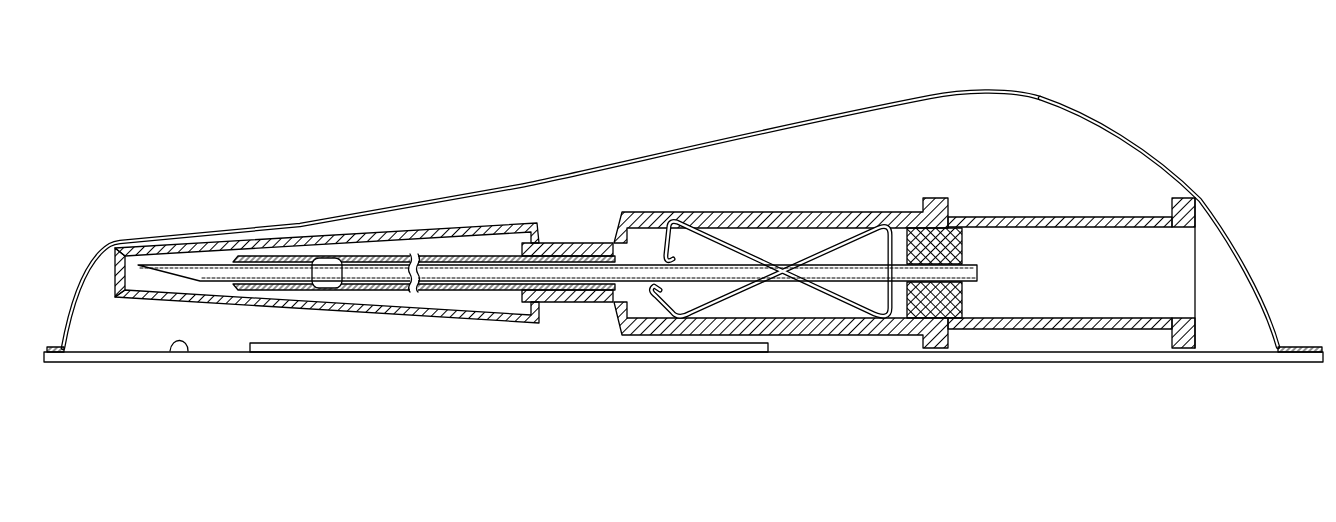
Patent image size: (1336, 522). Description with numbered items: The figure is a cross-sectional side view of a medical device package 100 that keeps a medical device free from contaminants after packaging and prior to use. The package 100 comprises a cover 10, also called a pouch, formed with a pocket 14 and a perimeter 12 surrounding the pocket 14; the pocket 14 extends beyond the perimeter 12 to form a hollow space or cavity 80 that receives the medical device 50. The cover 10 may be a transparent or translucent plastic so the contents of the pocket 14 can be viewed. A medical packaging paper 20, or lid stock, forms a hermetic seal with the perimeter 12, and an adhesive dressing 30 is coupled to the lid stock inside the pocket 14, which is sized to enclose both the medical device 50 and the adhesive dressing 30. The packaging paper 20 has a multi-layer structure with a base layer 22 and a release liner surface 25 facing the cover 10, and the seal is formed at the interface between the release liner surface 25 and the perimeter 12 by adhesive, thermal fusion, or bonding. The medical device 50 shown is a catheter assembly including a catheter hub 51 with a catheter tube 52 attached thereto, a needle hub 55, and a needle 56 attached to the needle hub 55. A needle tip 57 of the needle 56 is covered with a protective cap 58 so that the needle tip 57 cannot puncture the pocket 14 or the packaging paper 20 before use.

The package 100 is at (342, 96).
The cover 10 is at (927, 88).
The perimeter 12 is at (58, 347).
The pocket 14 is at (718, 150).
The medical packaging paper 20 is at (840, 370).
The base layer 22 is at (416, 363).
The release liner surface 25 is at (170, 351).
The adhesive dressing 30 is at (330, 343).
The medical device 50 is at (577, 238).
The catheter hub 51 is at (822, 212).
The catheter tube 52 is at (362, 256).
The needle hub 55 is at (1112, 215).
The needle 56 is at (208, 276).
The needle tip 57 is at (122, 262).
The protective cap 58 is at (468, 230).
The cavity 80 is at (1022, 155).